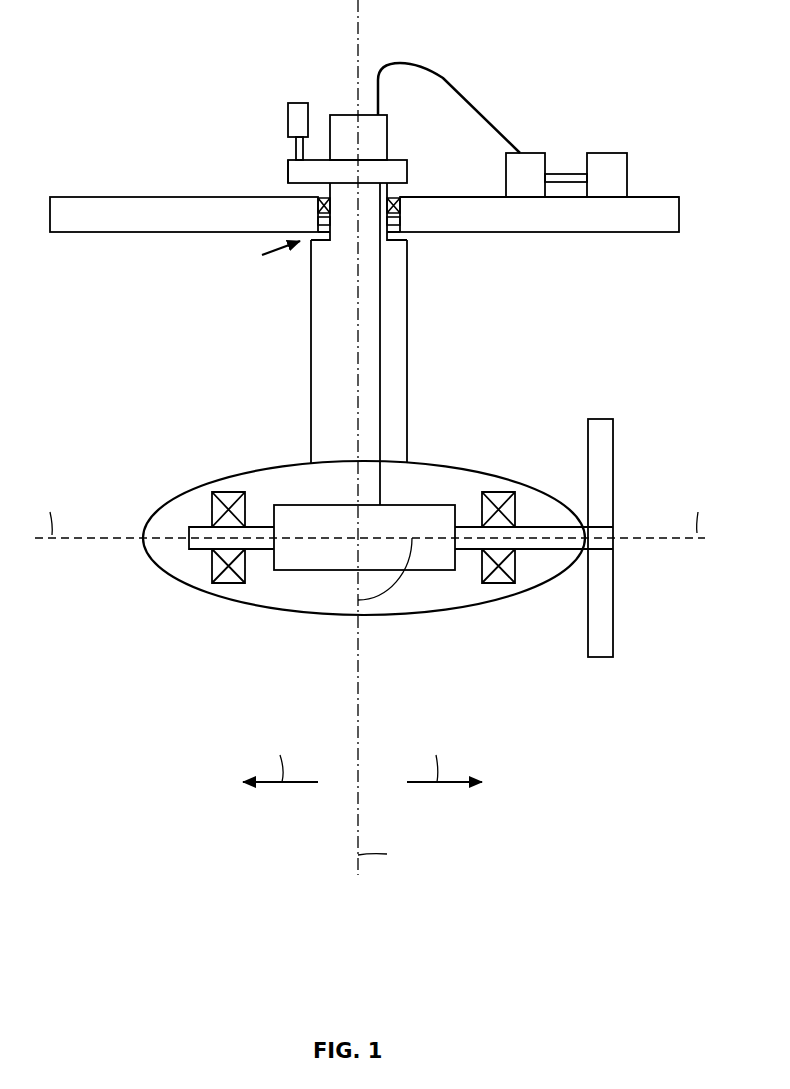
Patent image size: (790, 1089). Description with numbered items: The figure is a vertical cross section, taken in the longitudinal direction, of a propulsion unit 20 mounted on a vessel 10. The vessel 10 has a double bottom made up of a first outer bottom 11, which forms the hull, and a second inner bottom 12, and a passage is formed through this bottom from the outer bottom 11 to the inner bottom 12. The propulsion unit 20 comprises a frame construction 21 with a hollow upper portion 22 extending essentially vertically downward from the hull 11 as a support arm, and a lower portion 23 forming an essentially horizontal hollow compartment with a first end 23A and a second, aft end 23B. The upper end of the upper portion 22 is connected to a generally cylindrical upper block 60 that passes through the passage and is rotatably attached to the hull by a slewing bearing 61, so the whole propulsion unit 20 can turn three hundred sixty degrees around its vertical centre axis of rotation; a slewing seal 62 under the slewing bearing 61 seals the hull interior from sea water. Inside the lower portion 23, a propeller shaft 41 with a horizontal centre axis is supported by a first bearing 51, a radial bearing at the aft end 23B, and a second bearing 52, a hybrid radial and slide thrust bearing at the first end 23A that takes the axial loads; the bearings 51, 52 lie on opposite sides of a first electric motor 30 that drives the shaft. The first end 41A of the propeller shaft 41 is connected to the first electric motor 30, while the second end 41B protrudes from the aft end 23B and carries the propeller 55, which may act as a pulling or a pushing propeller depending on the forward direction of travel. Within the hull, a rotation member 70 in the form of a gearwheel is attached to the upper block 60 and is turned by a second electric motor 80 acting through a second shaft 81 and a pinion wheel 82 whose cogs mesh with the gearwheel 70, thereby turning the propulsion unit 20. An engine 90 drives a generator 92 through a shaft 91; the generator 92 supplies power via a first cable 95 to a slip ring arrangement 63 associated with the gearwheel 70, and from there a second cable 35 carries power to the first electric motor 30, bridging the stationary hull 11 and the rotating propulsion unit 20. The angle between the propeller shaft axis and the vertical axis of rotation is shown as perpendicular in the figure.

The vessel 10 is at (582, 51).
The first outer bottom 11 is at (662, 233).
The second inner bottom 12 is at (661, 197).
The propulsion unit 20 is at (217, 392).
The frame construction 21 is at (291, 462).
The upper portion 22 is at (315, 322).
The lower portion 23 is at (298, 602).
The first end 23A is at (193, 572).
The second end 23B is at (542, 573).
The first electric motor 30 is at (333, 512).
The second cable 35 is at (380, 332).
The propeller shaft 41 is at (468, 533).
The first end of the propeller shaft 41A is at (190, 545).
The second end of the propeller shaft 41B is at (610, 542).
The first bearing 51 is at (497, 497).
The second bearing 52 is at (220, 495).
The propeller 55 is at (600, 428).
The upper block 60 is at (347, 228).
The slewing bearing 61 is at (398, 205).
The slewing seal 62 is at (398, 222).
The slip ring arrangement 63 is at (343, 123).
The rotation member 70 is at (390, 170).
The second electric motor 80 is at (288, 110).
The second shaft 81 is at (297, 150).
The pinion wheel 82 is at (288, 172).
The engine 90 is at (609, 160).
The shaft 91 is at (564, 180).
The generator 92 is at (528, 160).
The first cable 95 is at (437, 70).